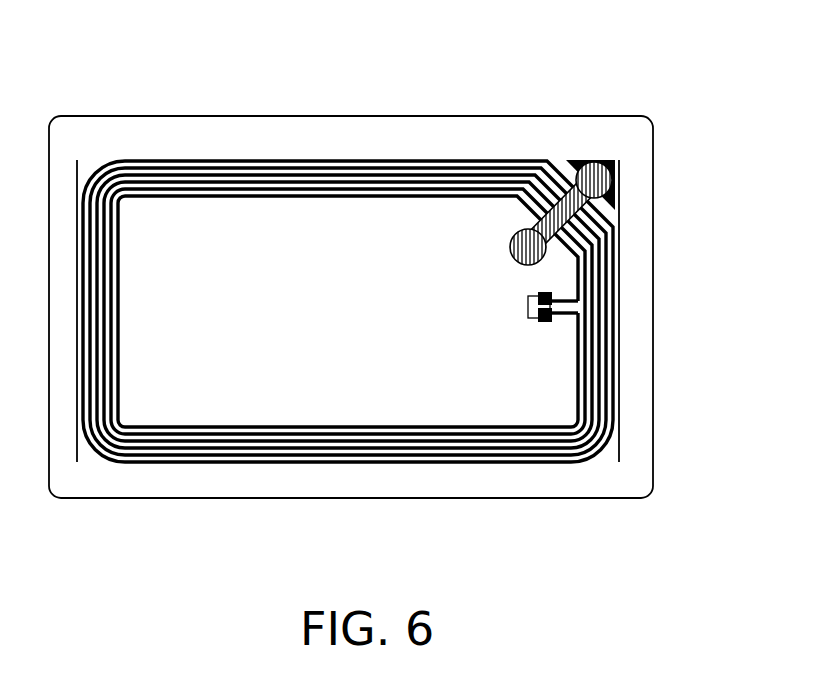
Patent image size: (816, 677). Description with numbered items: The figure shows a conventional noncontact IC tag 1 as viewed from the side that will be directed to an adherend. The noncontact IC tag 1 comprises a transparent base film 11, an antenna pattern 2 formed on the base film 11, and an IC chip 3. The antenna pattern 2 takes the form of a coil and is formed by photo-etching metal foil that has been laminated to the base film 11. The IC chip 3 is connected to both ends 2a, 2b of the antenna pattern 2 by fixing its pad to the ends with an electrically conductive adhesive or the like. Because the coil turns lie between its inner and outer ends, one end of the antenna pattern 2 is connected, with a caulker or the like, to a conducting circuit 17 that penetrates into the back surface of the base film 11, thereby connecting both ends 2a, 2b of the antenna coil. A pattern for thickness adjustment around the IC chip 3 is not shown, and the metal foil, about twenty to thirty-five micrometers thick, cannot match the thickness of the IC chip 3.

The noncontact IC tag 1 is at (393, 293).
The antenna pattern 2 is at (232, 480).
The end of the antenna pattern 2a is at (540, 293).
The end of the antenna pattern 2b is at (545, 322).
The IC chip 3 is at (528, 307).
The base film 11 is at (563, 499).
The conducting circuit 17 is at (612, 173).